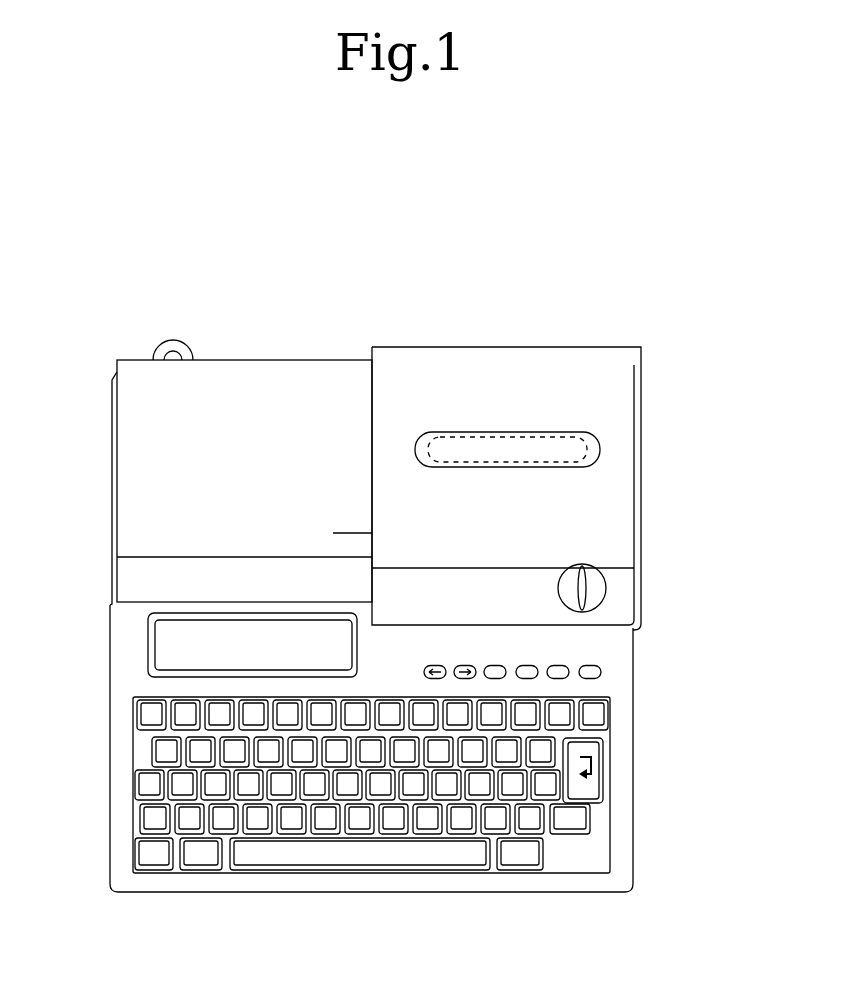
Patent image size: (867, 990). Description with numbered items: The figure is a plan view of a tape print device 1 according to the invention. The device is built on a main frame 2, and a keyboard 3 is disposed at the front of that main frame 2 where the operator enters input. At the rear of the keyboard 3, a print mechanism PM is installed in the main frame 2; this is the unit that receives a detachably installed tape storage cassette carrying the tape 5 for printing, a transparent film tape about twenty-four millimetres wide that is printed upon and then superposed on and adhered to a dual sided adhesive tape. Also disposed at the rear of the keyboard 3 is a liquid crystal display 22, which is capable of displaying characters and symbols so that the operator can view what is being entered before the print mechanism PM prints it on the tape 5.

The tape print device 1 is at (674, 377).
The main frame 2 is at (648, 476).
The keyboard 3 is at (266, 878).
The tape for printing 5 is at (348, 533).
The liquid crystal display 22 is at (158, 637).
The print mechanism PM is at (503, 468).